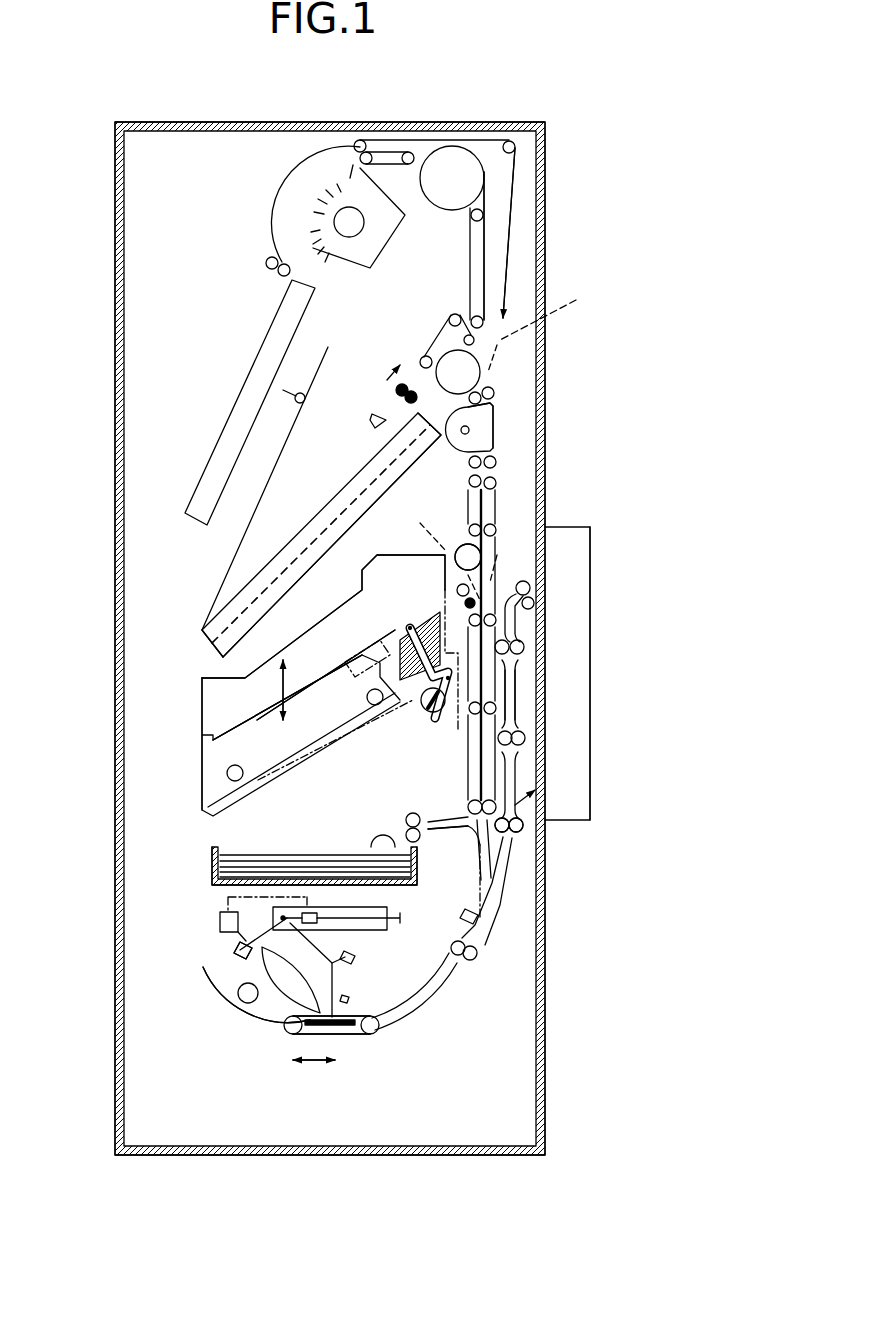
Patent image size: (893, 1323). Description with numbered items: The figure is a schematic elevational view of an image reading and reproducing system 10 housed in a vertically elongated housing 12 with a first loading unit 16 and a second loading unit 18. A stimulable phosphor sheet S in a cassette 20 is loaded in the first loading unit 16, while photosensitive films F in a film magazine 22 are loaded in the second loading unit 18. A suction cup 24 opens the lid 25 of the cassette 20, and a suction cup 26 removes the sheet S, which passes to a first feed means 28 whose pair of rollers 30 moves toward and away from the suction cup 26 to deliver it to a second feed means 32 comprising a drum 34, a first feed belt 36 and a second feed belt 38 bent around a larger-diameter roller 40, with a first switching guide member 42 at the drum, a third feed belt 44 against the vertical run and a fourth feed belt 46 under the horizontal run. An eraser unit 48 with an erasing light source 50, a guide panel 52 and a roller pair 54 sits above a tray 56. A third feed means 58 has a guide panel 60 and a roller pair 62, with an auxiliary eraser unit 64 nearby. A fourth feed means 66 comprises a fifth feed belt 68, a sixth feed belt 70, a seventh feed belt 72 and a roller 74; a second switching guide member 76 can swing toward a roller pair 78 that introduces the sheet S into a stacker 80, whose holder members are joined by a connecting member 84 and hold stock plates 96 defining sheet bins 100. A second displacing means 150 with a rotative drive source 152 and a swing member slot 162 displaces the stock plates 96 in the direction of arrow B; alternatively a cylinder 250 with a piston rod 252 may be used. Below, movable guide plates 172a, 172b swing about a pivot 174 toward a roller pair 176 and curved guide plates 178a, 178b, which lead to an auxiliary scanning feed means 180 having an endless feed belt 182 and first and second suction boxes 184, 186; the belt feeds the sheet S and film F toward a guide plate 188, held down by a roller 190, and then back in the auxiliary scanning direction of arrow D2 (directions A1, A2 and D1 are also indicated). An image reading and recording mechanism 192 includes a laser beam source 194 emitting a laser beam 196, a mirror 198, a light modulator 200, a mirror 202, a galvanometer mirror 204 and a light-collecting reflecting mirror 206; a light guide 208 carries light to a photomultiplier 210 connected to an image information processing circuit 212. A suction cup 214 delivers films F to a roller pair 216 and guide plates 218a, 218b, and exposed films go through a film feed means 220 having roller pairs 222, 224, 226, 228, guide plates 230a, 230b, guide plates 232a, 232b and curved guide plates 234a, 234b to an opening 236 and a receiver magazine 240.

The image reading and reproducing system 10 is at (411, 100).
The housing 12 is at (222, 121).
The first loading unit 16 is at (200, 620).
The second loading unit 18 is at (205, 860).
The cassette 20 is at (205, 640).
The film magazine 22 is at (207, 868).
The suction cup 24 is at (297, 403).
The lid 25 is at (235, 549).
The suction cup 26 is at (370, 422).
The first feed means 28 is at (409, 350).
The pair of rollers 30 is at (396, 392).
The second feed means 32 is at (516, 233).
The drum 34 is at (447, 350).
The first feed belt 36 is at (452, 312).
The second feed belt 38 is at (506, 270).
The larger-diameter roller 40 is at (462, 158).
The first switching guide member 42 is at (505, 345).
The third feed belt 44 is at (468, 236).
The fourth feed belt 46 is at (405, 165).
The eraser unit 48 is at (250, 196).
The erasing light source 50 is at (345, 212).
The guide panel 52 is at (308, 178).
The roller pair 54 is at (268, 260).
The tray 56 is at (270, 320).
The third feed means 58 is at (506, 410).
The guide panel 60 is at (495, 425).
The roller pair 62 is at (496, 458).
The auxiliary eraser unit 64 is at (395, 447).
The fourth feed means 66 is at (502, 480).
The fifth feed belt 68 is at (506, 494).
The sixth feed belt 70 is at (466, 484).
The seventh feed belt 72 is at (468, 765).
The roller 74 is at (456, 548).
The second switching guide member 76 is at (440, 565).
The roller pair 78 is at (458, 585).
The stacker 80 is at (200, 745).
The connecting member 84 is at (319, 740).
The stock plates 96 is at (385, 622).
The sheet bins 100 is at (355, 612).
The second displacing means 150 is at (410, 710).
The rotative drive source 152 is at (372, 684).
The slot 162 is at (432, 714).
The movable guide plate 172a is at (508, 855).
The movable guide plate 172b is at (512, 865).
The pivot 174 is at (466, 946).
The roller pair 176 is at (478, 956).
The curved guide plate 178a is at (437, 1007).
The curved guide plate 178b is at (412, 1013).
The auxiliary scanning feed means 180 is at (333, 1075).
The auxiliary scanning endless feed belt 182 is at (360, 1040).
The first suction box 184 is at (293, 1030).
The second suction box 186 is at (352, 1040).
The guide plate 188 is at (277, 983).
The roller 190 is at (237, 997).
The image reading and recording mechanism 192 is at (372, 948).
The laser beam source 194 is at (398, 926).
The laser beam 196 is at (398, 910).
The mirror 198 is at (390, 921).
The light modulator 200 is at (273, 920).
The mirror 202 is at (235, 942).
The galvanometer mirror 204 is at (356, 962).
The light-collecting reflecting mirror 206 is at (349, 998).
The light guide 208 is at (265, 1003).
The photomultiplier 210 is at (203, 968).
The image information processing circuit 212 is at (217, 915).
The suction cup 214 is at (378, 838).
The roller pair 216 is at (405, 818).
The guide plate 218a is at (432, 831).
The guide plate 218b is at (440, 815).
The film feed means 220 is at (540, 822).
The roller pair 222 is at (522, 832).
The roller pair 224 is at (515, 737).
The roller pair 226 is at (517, 673).
The roller pair 228 is at (513, 613).
The guide plate 230a is at (548, 768).
The guide plate 230b is at (548, 790).
The guide plate 232a is at (545, 715).
The guide plate 232b is at (540, 692).
The curved guide plate 234a is at (527, 645).
The curved guide plate 234b is at (463, 603).
The opening 236 is at (547, 591).
The receiver magazine 240 is at (590, 612).
The cylinder 250 is at (345, 675).
The piston rod 252 is at (395, 648).
The direction A1 is at (295, 686).
The direction A2 is at (295, 691).
The arrow B is at (372, 632).
The direction D1 is at (312, 1049).
The arrow D2 is at (320, 1049).
The photosensitive film F is at (265, 846).
The stimulable phosphor sheet S is at (245, 598).